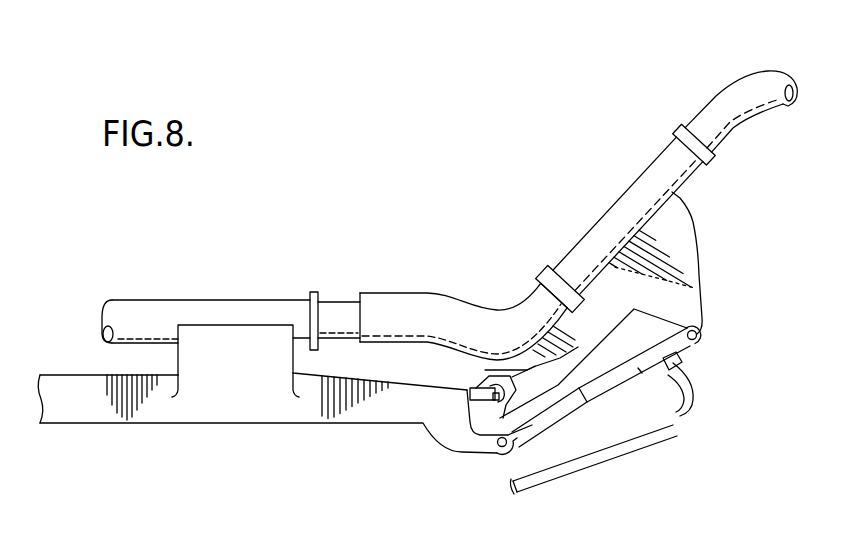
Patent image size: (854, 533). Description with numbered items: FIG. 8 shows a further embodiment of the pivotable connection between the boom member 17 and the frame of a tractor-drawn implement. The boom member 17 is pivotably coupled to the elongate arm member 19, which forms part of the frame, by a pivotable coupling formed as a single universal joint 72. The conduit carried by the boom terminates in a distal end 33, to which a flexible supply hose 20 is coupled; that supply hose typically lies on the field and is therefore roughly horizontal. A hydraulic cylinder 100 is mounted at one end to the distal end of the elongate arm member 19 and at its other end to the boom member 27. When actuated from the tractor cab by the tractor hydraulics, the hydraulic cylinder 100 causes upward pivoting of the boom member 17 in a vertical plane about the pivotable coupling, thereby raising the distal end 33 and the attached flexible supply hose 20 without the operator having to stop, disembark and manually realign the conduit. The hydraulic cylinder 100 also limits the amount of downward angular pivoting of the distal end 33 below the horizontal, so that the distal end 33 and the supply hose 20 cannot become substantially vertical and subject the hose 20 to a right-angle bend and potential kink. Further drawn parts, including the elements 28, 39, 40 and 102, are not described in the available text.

The boom member 17 is at (597, 342).
The elongate arm member 19 is at (217, 412).
The flexible supply hose 20 is at (742, 99).
The boom member 27 is at (678, 247).
The pipe mounting bracket 28 is at (527, 383).
The distal end of conduit means 33 is at (641, 197).
The elbow pipe section 39 is at (415, 300).
The horizontal pipe 40 is at (212, 310).
The universal joint 72 is at (473, 451).
The hydraulic cylinder 100 is at (696, 397).
The hydraulic line 102 is at (610, 447).